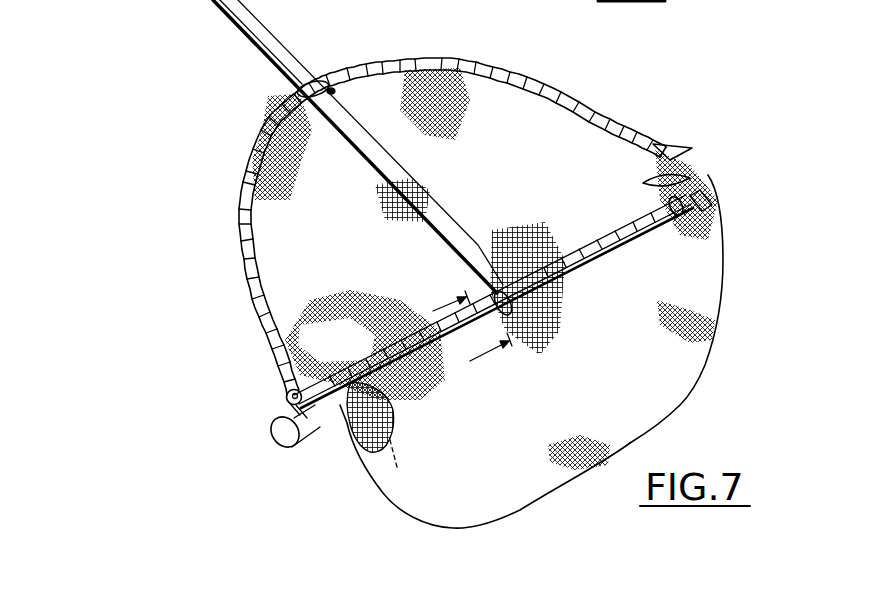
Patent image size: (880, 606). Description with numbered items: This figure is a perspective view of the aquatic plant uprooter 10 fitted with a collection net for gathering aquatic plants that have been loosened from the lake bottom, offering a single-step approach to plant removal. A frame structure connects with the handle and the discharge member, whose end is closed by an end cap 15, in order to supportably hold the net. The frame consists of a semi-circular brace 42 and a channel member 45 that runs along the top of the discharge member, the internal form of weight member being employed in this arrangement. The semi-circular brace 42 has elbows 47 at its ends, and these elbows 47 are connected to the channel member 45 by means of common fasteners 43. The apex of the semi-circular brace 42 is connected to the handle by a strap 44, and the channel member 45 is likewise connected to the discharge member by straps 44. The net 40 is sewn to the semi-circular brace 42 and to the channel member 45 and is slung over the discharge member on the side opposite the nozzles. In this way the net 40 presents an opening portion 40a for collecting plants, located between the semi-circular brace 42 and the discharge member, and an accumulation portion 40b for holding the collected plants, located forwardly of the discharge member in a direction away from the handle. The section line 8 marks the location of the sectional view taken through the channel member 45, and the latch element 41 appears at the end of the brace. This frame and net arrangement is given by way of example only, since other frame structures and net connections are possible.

The aquatic plant uprooter 10 is at (358, 53).
The closed end cap 15 is at (278, 438).
The net 40 is at (722, 285).
The opening portion 40a is at (552, 108).
The accumulation portion 40b is at (694, 396).
The latch tab 41 is at (687, 141).
The semi-circular brace 42 is at (641, 137).
The common fasteners 43 is at (649, 186).
The strap 44 is at (314, 80).
The channel member 45 is at (417, 333).
The elbows 47 is at (703, 188).
The section line 8- 8 is at (466, 334).